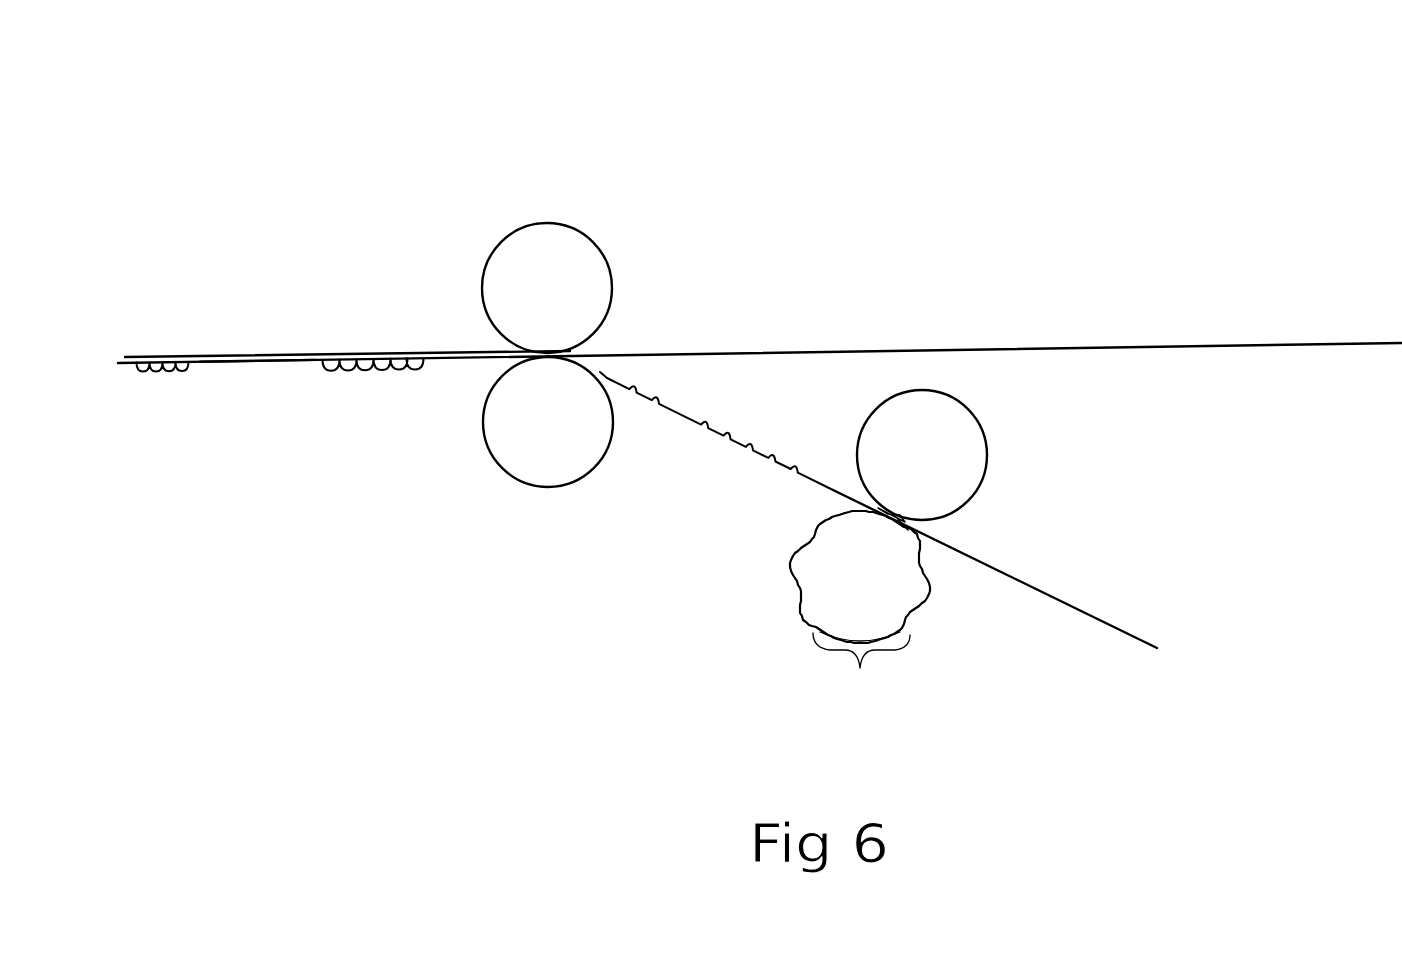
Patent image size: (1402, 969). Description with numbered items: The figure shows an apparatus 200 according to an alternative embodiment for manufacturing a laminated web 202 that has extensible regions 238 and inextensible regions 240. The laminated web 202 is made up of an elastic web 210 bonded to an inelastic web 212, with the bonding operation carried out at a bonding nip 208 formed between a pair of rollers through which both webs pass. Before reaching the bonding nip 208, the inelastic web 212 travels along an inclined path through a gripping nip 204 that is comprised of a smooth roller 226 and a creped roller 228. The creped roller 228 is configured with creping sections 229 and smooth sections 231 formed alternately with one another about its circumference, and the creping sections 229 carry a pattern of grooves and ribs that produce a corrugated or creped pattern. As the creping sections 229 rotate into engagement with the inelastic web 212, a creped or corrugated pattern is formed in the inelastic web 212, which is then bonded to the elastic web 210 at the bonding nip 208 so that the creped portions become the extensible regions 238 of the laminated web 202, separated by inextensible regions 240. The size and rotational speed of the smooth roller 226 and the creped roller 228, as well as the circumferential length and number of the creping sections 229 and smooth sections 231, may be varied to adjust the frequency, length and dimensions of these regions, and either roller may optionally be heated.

The apparatus 200 is at (313, 240).
The laminated web 202 is at (180, 354).
The gripping nip 204 is at (1020, 470).
The bonding nip 208 is at (527, 180).
The elastic web 210 is at (872, 350).
The inelastic web 212 is at (1057, 600).
The smooth roller 226 is at (977, 418).
The creped roller 228 is at (847, 620).
The creping sections 229 is at (782, 535).
The smooth sections 231 is at (861, 679).
The extensible regions 238 is at (184, 372).
The inextensible regions 240 is at (270, 363).